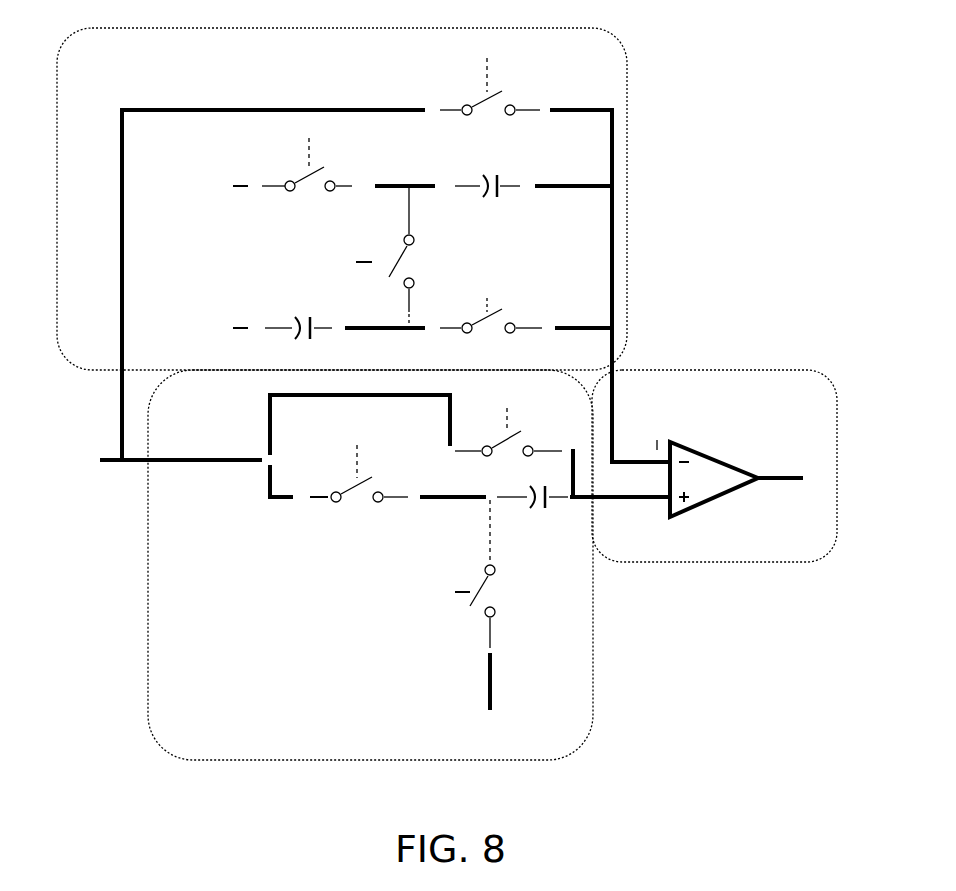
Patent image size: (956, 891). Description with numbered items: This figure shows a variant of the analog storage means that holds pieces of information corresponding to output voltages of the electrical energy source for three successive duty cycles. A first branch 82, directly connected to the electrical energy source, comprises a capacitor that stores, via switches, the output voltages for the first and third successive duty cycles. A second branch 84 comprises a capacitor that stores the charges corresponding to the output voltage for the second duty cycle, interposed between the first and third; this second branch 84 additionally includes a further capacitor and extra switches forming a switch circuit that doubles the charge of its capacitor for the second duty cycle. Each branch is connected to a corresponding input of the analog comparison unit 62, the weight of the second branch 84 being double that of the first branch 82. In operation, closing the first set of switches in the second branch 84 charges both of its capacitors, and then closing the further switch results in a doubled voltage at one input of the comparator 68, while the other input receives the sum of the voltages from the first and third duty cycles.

The second branch 84 is at (625, 228).
The first branch 82 is at (543, 760).
The analog comparison unit 62 is at (678, 555).
The comparator 68 is at (715, 500).